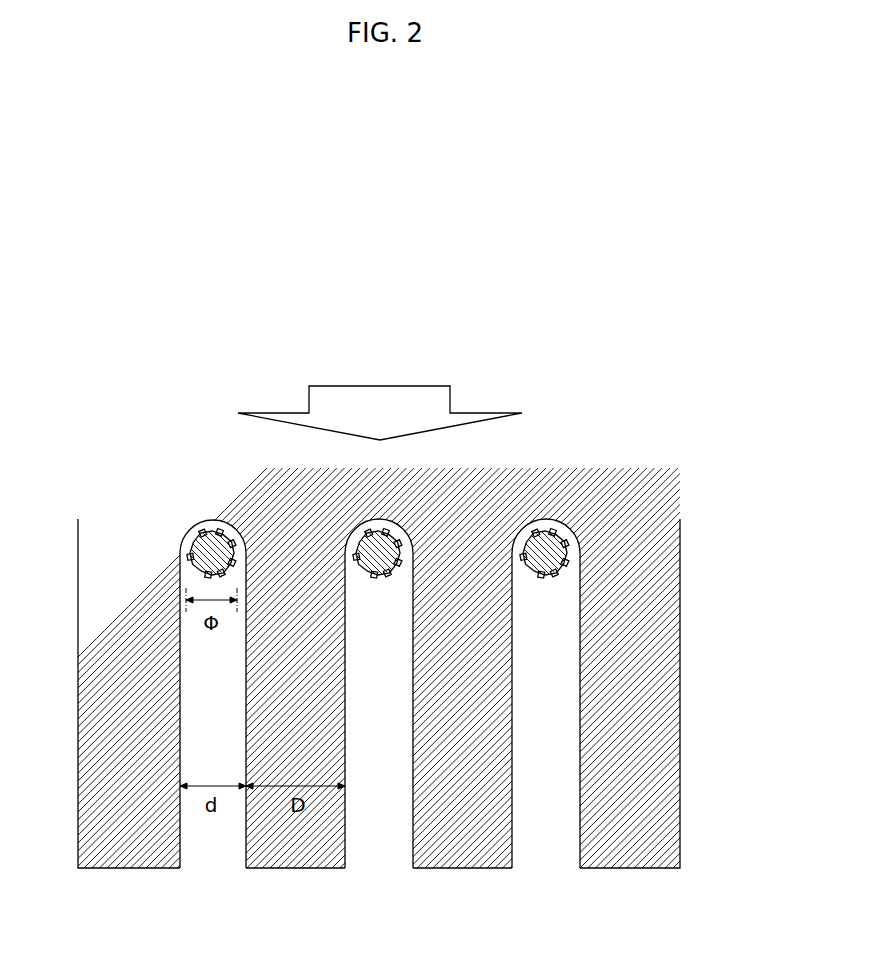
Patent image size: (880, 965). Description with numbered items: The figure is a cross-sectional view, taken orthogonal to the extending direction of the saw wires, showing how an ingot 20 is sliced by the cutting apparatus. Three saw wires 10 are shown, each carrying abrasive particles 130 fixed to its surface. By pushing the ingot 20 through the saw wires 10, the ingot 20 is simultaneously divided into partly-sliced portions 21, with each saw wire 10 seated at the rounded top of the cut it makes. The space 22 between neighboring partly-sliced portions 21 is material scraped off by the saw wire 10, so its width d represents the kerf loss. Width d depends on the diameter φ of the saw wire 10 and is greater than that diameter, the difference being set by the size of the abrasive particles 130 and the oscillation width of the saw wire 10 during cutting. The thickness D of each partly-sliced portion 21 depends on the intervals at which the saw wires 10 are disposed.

The saw wire 10 is at (188, 553).
The ingot 20 is at (698, 440).
The partly-sliced portion 21 is at (130, 848).
The space 22 is at (212, 843).
The abrasive particle 130 is at (228, 529).